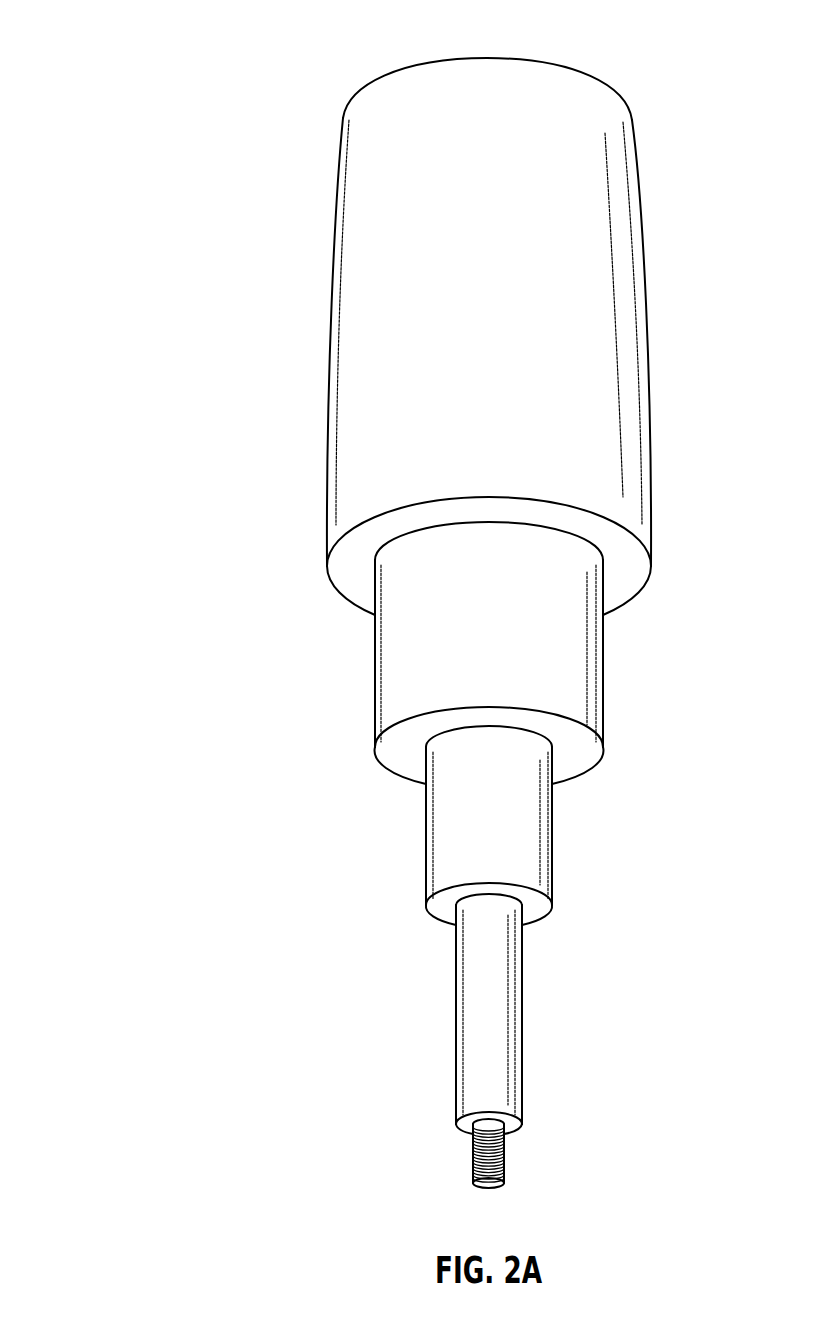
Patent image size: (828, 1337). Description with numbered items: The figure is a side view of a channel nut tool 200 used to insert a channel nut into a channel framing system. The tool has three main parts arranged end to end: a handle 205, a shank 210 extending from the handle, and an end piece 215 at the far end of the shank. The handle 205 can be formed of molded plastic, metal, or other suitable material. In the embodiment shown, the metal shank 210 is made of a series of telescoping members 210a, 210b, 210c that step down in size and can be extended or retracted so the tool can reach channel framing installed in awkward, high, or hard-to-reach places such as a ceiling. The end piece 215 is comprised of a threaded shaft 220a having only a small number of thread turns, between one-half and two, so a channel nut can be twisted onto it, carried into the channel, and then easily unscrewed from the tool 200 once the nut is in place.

The channel nut tool 200 is at (313, 52).
The handle 205 is at (349, 326).
The shank 210 is at (208, 722).
The telescoping member 210a is at (392, 659).
The telescoping member 210b is at (438, 832).
The telescoping member 210c is at (467, 1029).
The threaded shaft 220a is at (472, 1160).
The end piece 215 is at (548, 1180).